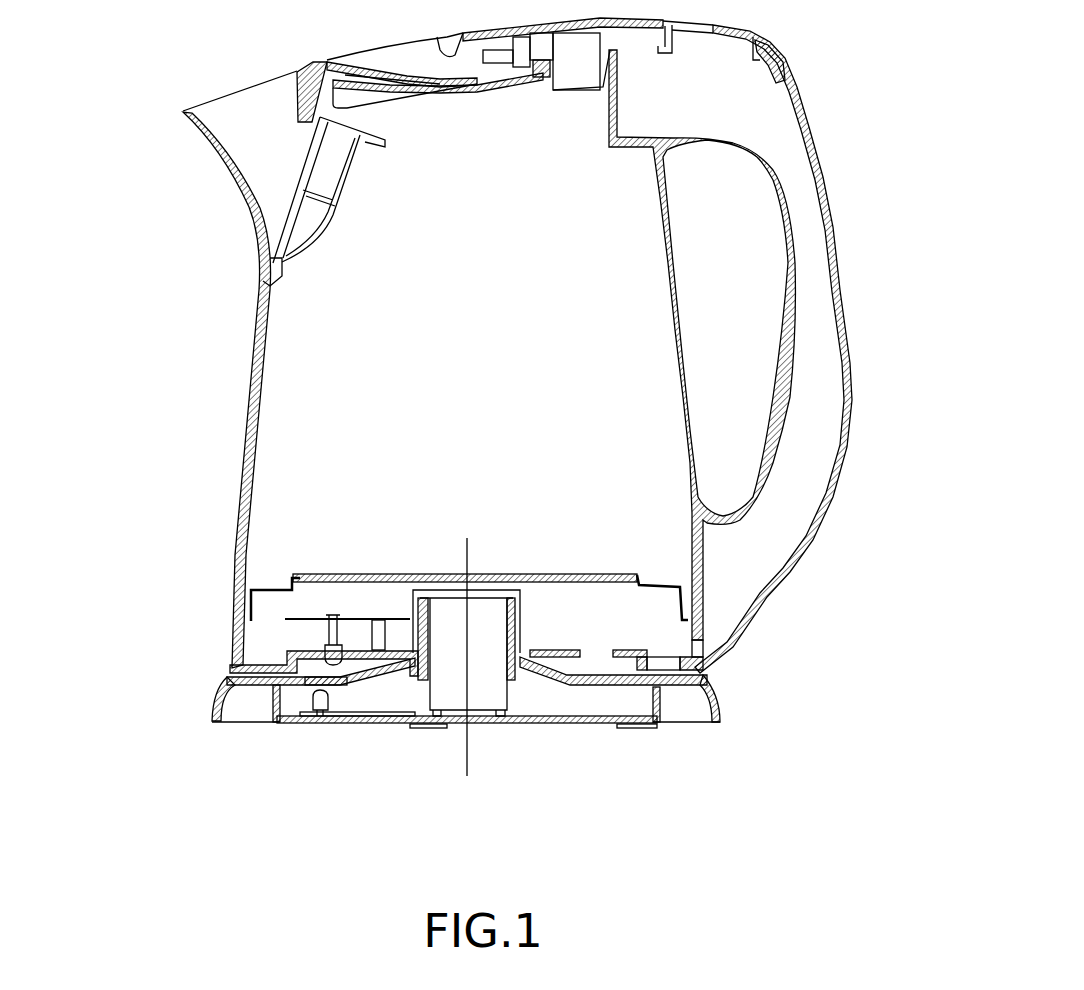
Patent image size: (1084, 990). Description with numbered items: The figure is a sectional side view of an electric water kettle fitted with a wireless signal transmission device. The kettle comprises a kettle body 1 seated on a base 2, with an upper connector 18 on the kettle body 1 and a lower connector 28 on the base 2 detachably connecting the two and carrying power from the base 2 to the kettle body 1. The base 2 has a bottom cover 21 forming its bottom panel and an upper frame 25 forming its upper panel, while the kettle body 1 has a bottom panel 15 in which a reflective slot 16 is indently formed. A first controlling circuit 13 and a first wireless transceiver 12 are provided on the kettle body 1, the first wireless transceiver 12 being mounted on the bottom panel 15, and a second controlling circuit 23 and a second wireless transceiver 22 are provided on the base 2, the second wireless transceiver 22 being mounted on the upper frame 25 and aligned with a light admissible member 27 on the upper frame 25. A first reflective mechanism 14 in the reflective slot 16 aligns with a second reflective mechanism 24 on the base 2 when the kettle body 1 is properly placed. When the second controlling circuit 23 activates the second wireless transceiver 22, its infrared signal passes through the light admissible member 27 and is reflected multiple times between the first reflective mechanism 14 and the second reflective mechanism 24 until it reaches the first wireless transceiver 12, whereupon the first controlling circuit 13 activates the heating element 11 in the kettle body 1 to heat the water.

The kettle body 1 is at (270, 400).
The base 2 is at (718, 695).
The heating element 11 is at (507, 578).
The first wireless transceiver 12 is at (323, 640).
The first controlling circuit 13 is at (357, 620).
The first reflective mechanism 14 is at (308, 656).
The bottom panel 15 is at (295, 664).
The reflective slot 16 is at (520, 620).
The upper connector 18 is at (580, 667).
The bottom cover 21 is at (530, 725).
The second wireless transceiver 22 is at (320, 712).
The second controlling circuit 23 is at (367, 714).
The second reflective mechanism 24 is at (603, 670).
The upper frame 25 is at (247, 682).
The light admissible member 27 is at (318, 685).
The lower connector 28 is at (478, 685).